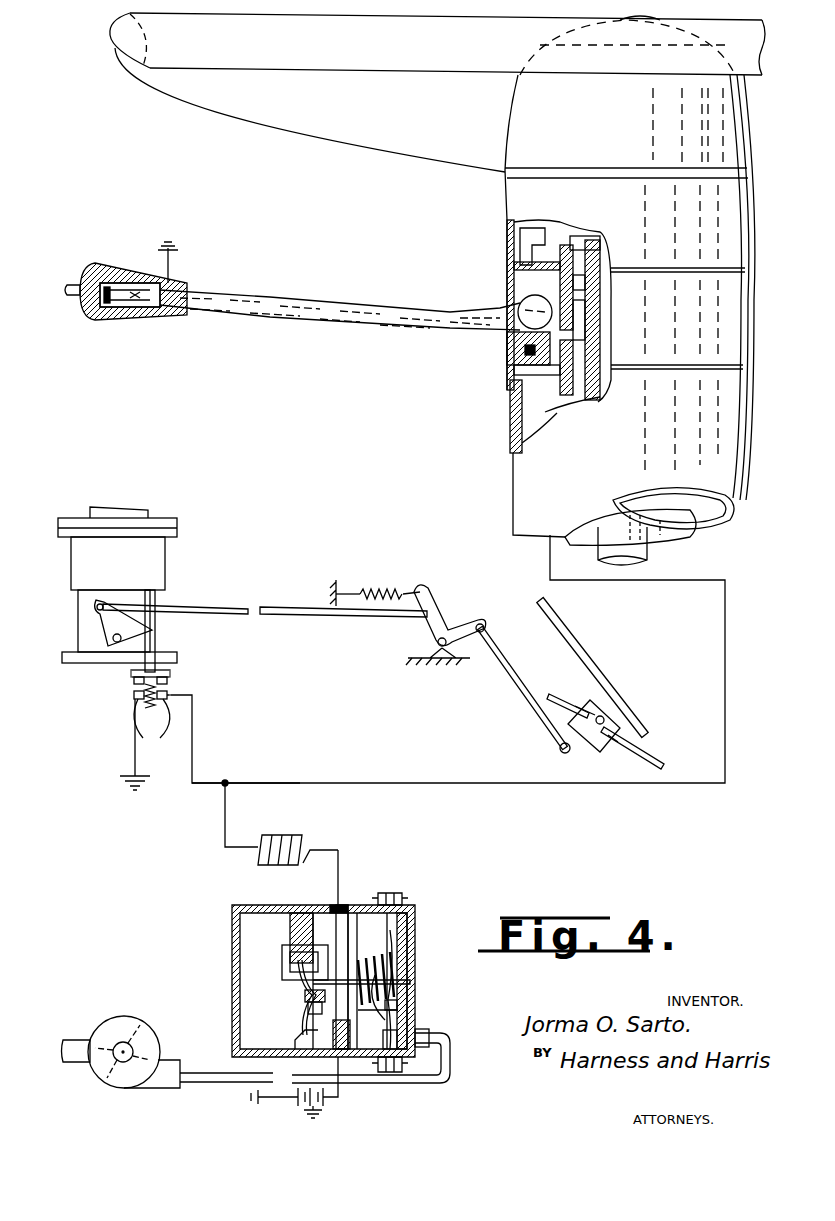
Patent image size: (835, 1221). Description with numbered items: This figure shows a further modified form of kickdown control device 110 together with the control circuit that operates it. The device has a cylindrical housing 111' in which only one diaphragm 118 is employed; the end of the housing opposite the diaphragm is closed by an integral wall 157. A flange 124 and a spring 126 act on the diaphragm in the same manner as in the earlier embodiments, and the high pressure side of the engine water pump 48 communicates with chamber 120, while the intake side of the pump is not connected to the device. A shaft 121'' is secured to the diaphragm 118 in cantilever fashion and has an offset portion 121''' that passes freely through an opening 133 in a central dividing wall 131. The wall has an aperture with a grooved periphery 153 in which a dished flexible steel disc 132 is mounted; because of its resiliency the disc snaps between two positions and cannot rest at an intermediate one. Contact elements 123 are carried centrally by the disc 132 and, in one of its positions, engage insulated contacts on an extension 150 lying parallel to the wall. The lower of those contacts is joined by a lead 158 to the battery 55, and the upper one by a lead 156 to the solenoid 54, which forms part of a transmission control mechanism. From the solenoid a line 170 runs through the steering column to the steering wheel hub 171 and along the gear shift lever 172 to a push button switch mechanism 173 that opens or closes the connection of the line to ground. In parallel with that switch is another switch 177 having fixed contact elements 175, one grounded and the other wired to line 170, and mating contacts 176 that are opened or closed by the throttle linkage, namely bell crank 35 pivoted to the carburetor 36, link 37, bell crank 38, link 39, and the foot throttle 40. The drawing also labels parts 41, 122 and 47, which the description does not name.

The steering wheel hub 171 is at (494, 188).
The line 170 is at (509, 413).
The gear shift lever 172 is at (348, 323).
The push button switch mechanism 173 is at (82, 312).
The carburetor 36 is at (155, 563).
The bell crank 35 is at (150, 630).
The link 37 is at (300, 617).
The bell crank 38 is at (441, 626).
The link 39 is at (525, 682).
The foot throttle 40 is at (599, 742).
The pedal bar 41 is at (652, 750).
The mating contacts 176 is at (172, 680).
The fixed contact elements 175 is at (146, 728).
The switch 177 is at (124, 686).
The solenoid 54 is at (272, 866).
The lead 156 is at (344, 870).
The integral wall 157 is at (232, 960).
The dividing wall 131 is at (288, 912).
The offset portion 121''' is at (285, 952).
The opening 133 is at (290, 970).
The contact elements 123 is at (306, 1002).
The dished flexible steel disc 132 is at (307, 1012).
The aperture with grooved periphery 153 is at (296, 1031).
The kickdown control device 110 is at (421, 990).
The flange 124 is at (408, 914).
The chamber 120 is at (400, 930).
The spring 126 is at (396, 958).
The shaft 121'' is at (418, 986).
The housing 111' is at (404, 888).
The valve member 122 is at (405, 1004).
The diaphragm 118 is at (403, 1030).
The extension 150 is at (306, 1058).
The battery 55 is at (309, 1107).
The lead 158 is at (340, 1062).
The conduit 47 is at (424, 1093).
The engine water pump 48 is at (143, 1093).